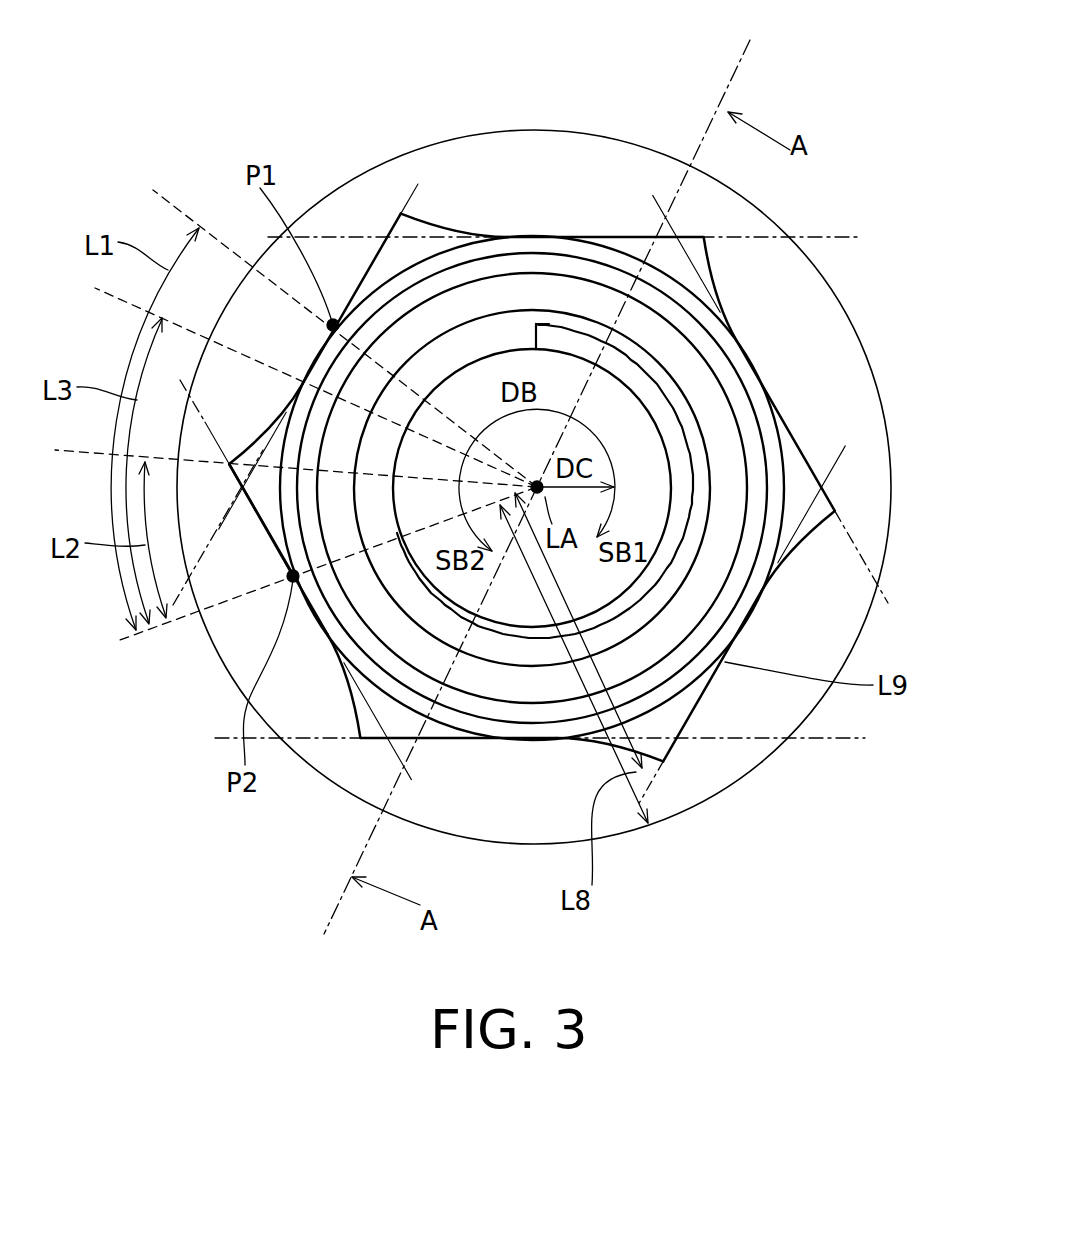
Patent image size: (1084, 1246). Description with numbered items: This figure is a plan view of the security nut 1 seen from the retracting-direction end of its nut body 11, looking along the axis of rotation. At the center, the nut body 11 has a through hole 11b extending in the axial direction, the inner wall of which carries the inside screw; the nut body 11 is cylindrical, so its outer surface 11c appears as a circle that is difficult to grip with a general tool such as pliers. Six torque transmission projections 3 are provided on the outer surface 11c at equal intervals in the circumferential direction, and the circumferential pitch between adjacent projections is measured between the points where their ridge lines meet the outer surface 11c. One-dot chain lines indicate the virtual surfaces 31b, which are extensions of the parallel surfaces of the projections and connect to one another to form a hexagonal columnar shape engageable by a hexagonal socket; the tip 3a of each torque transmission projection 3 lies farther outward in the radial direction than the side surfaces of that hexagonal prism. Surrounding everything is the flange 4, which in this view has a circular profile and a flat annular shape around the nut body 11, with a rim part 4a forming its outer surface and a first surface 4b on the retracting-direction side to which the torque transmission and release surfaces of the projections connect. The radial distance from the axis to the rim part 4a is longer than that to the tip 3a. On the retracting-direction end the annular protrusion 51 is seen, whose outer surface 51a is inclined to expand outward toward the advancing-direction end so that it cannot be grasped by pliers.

The security nut 1 is at (897, 98).
The torque transmission projection 3 is at (703, 727).
The tip 3a is at (400, 214).
The flange 4 is at (617, 817).
The rim part 4a is at (708, 798).
The first surface 4b is at (787, 698).
The nut body 11 is at (748, 620).
The through hole 11b is at (637, 436).
The outer surface 11c is at (780, 549).
The virtual surface 31b is at (264, 527).
The annular protrusion 51 is at (772, 402).
The outer surface 51a is at (745, 600).